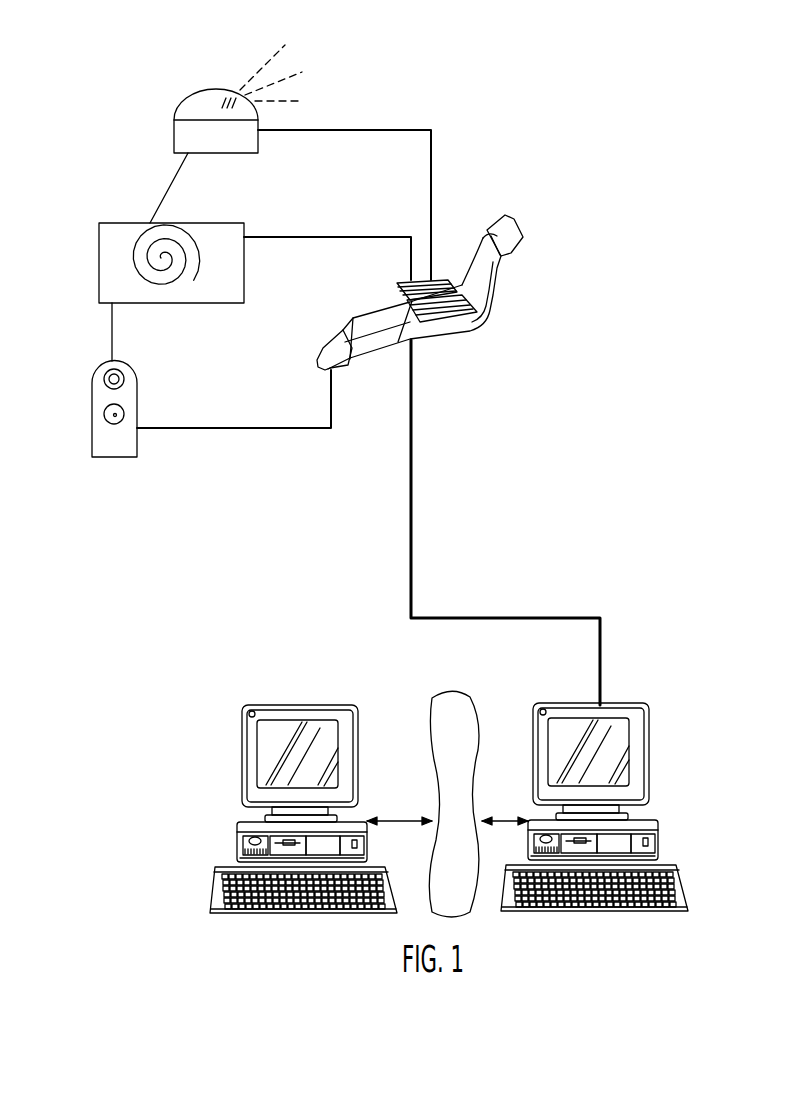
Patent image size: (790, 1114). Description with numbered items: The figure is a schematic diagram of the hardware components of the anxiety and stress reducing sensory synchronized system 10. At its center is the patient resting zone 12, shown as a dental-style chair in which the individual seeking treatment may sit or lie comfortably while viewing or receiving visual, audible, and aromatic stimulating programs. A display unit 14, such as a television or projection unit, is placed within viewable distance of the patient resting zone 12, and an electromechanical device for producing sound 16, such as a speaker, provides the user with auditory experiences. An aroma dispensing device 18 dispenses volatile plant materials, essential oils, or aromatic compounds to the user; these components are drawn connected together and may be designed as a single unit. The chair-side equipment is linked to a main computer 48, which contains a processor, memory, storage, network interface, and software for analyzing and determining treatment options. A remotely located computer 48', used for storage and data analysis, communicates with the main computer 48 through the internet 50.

The anxiety and stress reducing sensory synchronized system 10 is at (537, 112).
The patient resting zone 12 is at (510, 278).
The display unit 14 is at (99, 258).
The electromechanical device for producing sound 16 is at (92, 438).
The aroma dispensing device 18 is at (190, 90).
The main computer 48 is at (594, 776).
The remotely located computer 48' is at (290, 809).
The internet 50 is at (420, 697).